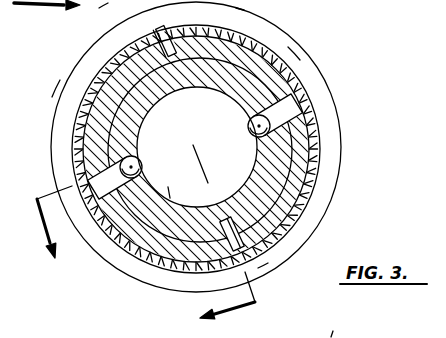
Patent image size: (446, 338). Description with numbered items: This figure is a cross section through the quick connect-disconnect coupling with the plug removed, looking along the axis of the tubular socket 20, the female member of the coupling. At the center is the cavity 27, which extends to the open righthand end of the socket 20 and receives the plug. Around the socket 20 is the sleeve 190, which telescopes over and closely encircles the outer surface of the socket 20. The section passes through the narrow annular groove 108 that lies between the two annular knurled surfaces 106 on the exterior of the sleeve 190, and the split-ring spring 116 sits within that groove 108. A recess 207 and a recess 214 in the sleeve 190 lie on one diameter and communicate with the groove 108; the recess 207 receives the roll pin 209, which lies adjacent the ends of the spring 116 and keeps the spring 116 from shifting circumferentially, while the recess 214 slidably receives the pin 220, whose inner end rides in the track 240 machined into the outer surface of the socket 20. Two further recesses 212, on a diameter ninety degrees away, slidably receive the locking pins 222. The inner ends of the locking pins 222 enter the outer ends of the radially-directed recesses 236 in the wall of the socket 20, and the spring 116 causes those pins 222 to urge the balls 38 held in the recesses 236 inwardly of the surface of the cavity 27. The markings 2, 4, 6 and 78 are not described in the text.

The tubular socket 20 is at (248, 98).
The cavity 27 is at (128, 257).
The ball 38 is at (163, 157).
The section line 78 is at (336, 324).
The annular knurled surface 106 is at (95, 0).
The annular groove 108 is at (288, 47).
The split-ring spring 116 is at (318, 186).
The sleeve 190 is at (52, 97).
The recess 207 is at (236, 8).
The roll pin 209 is at (107, 32).
The recess 212 is at (88, 156).
The recess 214 is at (203, 279).
The pin 220 is at (268, 263).
The locking pin 222 is at (86, 181).
The radially-directed recess 236 is at (139, 144).
The track 240 is at (246, 248).
The section line 2 is at (40, 6).
The section line 4 is at (146, 257).
The section line 6 is at (2, 117).